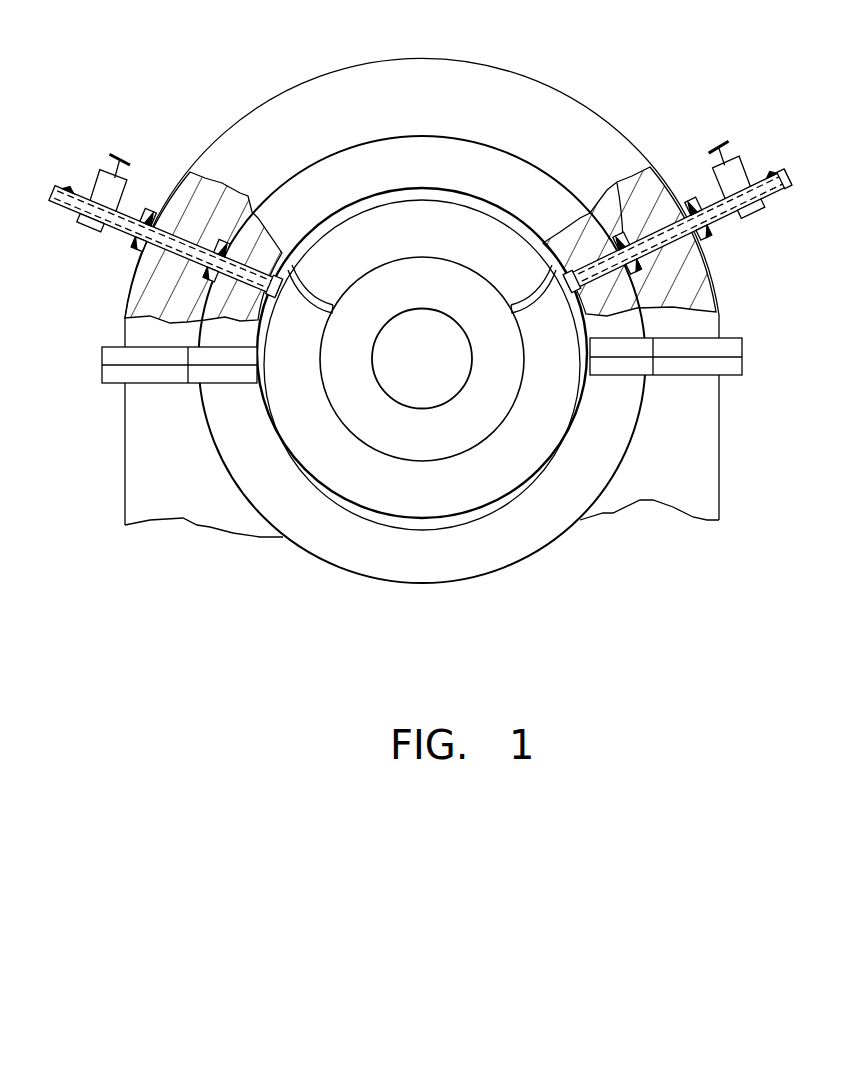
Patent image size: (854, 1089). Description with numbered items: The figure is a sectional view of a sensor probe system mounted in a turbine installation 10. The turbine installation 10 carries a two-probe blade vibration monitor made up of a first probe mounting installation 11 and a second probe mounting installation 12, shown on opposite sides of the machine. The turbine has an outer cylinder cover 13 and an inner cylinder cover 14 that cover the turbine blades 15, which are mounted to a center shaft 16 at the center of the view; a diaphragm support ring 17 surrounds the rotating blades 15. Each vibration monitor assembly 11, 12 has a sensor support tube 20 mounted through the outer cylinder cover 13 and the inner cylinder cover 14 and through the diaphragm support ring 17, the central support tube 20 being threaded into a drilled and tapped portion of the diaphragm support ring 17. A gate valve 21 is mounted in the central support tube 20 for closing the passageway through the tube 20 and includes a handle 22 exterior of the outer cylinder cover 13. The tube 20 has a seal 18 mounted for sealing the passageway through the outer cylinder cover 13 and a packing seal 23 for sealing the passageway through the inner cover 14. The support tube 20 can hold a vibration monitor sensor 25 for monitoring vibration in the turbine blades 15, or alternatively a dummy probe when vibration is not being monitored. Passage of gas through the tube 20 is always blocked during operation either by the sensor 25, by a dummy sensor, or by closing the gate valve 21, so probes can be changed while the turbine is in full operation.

The turbine installation 10 is at (459, 54).
The first probe mounting installation 11 is at (755, 172).
The second probe mounting installation 12 is at (142, 203).
The outer cylinder cover 13 is at (342, 66).
The inner cylinder cover 14 is at (303, 168).
The turbine blades 15 is at (345, 478).
The center shaft 16 is at (424, 400).
The diaphragm support ring 17 is at (520, 487).
The seal 18 is at (712, 252).
The sensor support tube 20 is at (718, 236).
The gate valve 21 is at (738, 160).
The handle 22 is at (718, 146).
The packing seal 23 is at (605, 215).
The sensor 25 is at (790, 186).